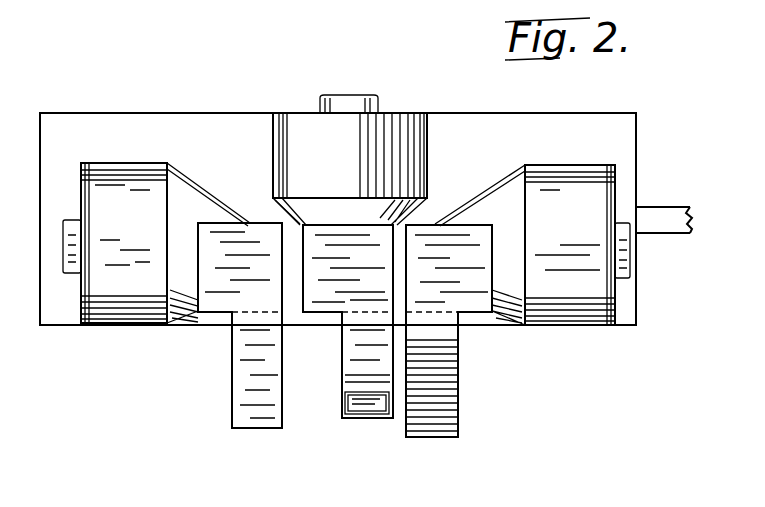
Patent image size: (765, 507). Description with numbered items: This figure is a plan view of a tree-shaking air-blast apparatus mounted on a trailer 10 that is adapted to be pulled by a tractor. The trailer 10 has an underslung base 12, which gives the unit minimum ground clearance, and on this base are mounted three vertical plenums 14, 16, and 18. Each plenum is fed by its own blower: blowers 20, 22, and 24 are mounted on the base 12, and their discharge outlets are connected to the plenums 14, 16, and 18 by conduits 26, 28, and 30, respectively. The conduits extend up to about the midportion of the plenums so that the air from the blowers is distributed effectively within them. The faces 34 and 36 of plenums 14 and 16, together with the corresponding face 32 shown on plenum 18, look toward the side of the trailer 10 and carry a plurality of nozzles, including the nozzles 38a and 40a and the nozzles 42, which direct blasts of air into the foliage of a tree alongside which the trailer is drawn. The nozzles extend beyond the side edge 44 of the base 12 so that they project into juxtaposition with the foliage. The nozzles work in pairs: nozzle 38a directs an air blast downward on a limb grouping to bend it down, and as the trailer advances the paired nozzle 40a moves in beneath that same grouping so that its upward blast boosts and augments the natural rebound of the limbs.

The trailer 10 is at (267, 92).
The underslung base 12 is at (148, 112).
The vertical plenum 14 is at (472, 343).
The vertical plenum 16 is at (329, 360).
The vertical plenum 18 is at (160, 338).
The blower 20 is at (615, 168).
The blower 22 is at (340, 164).
The blower 24 is at (135, 226).
The conduit 26 is at (499, 180).
The conduit 28 is at (278, 207).
The conduit 30 is at (184, 178).
The right bearing block 32 is at (492, 237).
The face of plenum 34 is at (318, 314).
The face of plenum 36 is at (197, 238).
The nozzle 38a is at (458, 425).
The nozzle 40a is at (360, 414).
The nozzles 42 is at (232, 420).
The side edge 44 is at (207, 328).